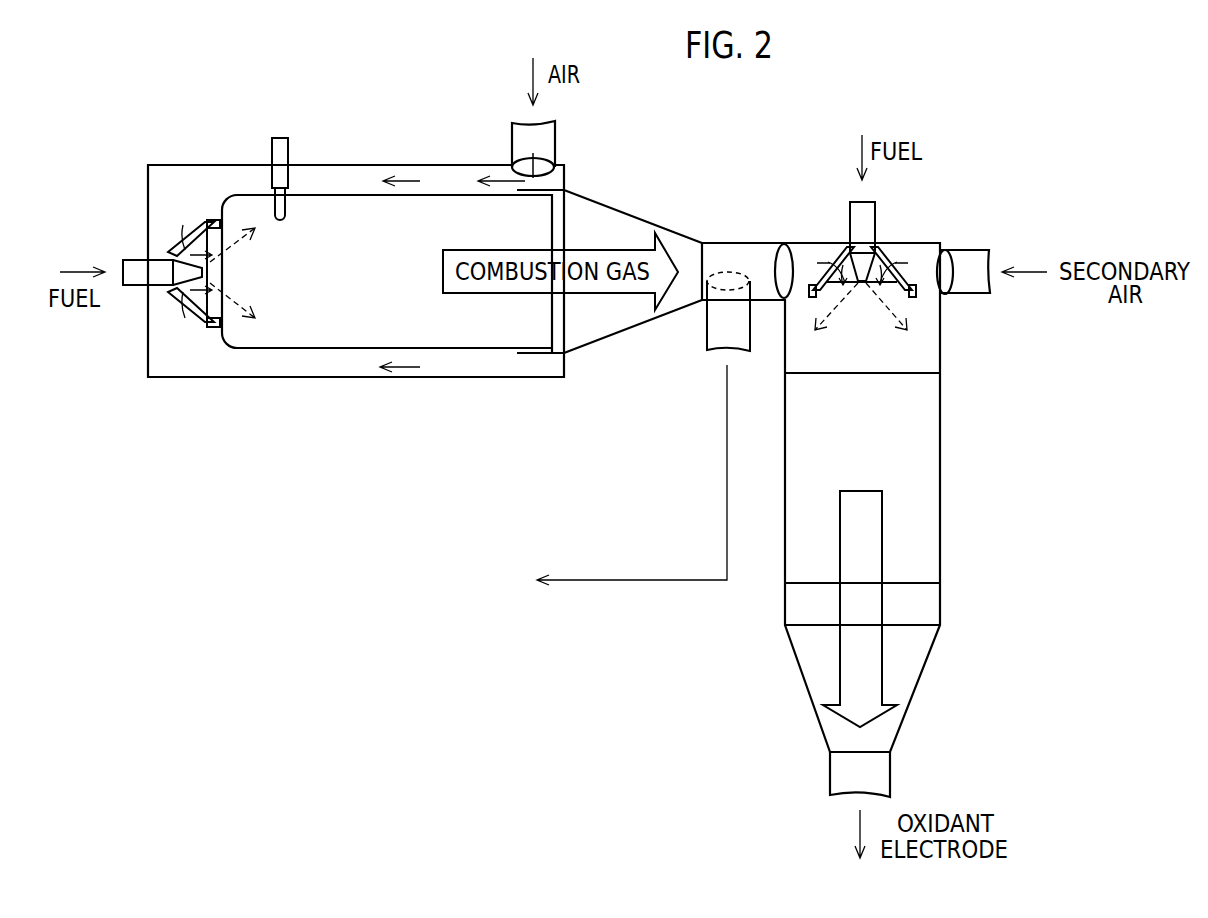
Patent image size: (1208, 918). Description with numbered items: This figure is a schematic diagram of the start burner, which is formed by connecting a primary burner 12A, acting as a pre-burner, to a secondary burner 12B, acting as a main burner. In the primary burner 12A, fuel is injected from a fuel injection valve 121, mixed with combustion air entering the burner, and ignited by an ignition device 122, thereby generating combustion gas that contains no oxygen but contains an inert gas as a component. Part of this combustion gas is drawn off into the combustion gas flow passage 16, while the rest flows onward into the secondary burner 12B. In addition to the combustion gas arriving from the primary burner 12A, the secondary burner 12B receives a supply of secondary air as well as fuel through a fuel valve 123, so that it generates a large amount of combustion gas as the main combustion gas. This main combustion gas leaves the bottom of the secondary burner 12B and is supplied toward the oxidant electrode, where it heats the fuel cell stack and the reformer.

The primary burner 12A is at (332, 343).
The secondary burner 12B is at (932, 460).
The fuel injection valve 121 is at (133, 285).
The ignition device 122 is at (288, 152).
The fuel valve 123 is at (875, 222).
The combustion gas flow passage 16 is at (588, 579).